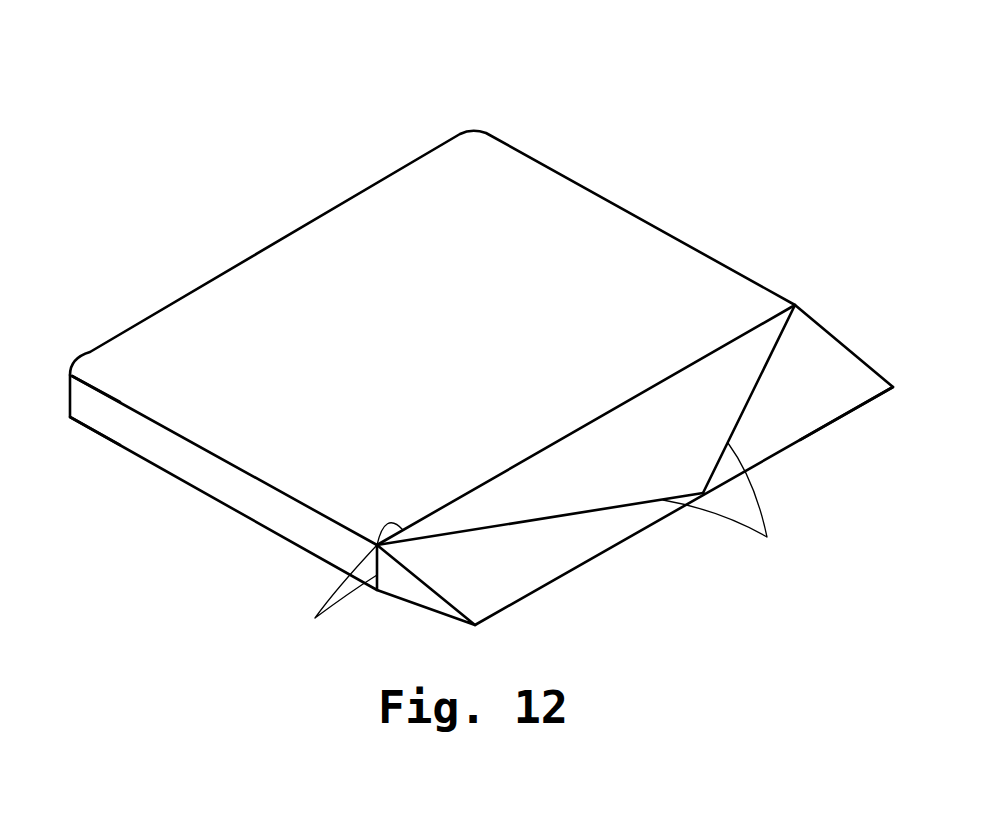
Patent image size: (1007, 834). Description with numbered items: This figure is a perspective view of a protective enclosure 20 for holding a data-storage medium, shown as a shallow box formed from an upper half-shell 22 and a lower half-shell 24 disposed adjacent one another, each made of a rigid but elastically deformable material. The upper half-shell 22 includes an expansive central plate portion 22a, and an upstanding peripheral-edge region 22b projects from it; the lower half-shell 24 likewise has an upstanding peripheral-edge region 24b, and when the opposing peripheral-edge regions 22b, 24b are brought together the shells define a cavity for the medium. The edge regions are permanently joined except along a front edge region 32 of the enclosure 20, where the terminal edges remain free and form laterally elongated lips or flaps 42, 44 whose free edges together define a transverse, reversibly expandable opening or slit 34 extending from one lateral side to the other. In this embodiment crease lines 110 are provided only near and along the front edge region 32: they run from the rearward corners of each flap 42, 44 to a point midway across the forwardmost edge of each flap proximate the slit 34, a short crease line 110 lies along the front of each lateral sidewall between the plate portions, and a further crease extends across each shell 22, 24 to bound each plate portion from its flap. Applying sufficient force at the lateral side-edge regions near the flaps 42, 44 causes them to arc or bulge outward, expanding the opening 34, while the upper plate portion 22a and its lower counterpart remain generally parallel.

The enclosure 20 is at (203, 104).
The upper half-shell 22 is at (532, 128).
The central plate portion 22a is at (626, 240).
The peripheral-edge region 22b is at (83, 388).
The lower half-shell 24 is at (222, 525).
The peripheral-edge region 24b is at (82, 417).
The front edge region 32 is at (808, 577).
The expandable opening 34 is at (800, 443).
The upper flap 42 is at (540, 577).
The lower flap 44 is at (425, 604).
The crease lines 110 is at (540, 544).